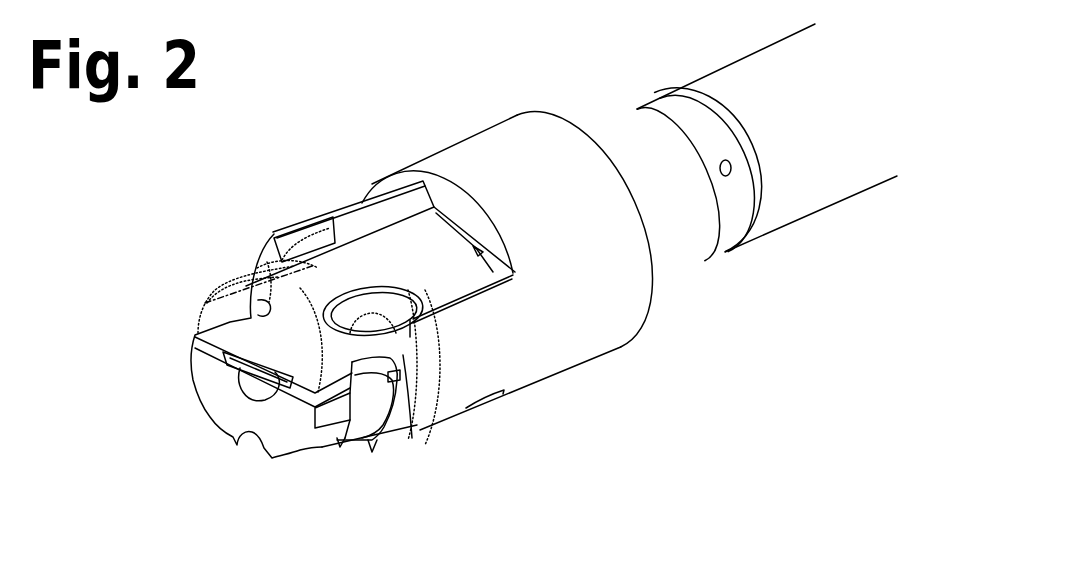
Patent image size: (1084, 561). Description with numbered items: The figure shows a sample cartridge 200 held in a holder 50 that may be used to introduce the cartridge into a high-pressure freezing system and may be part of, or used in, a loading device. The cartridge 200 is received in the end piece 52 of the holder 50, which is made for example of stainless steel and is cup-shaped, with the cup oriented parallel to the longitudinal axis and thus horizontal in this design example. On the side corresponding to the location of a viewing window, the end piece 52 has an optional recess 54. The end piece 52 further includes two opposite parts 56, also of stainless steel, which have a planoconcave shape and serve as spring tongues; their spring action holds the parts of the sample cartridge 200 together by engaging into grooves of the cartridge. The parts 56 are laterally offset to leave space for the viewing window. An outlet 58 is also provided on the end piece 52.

The holder 50 is at (509, 280).
The end piece 52 is at (553, 355).
The recess 54 is at (468, 219).
The parts 56 is at (328, 217).
The outlet 58 is at (731, 167).
The sample cartridge 200 is at (196, 291).